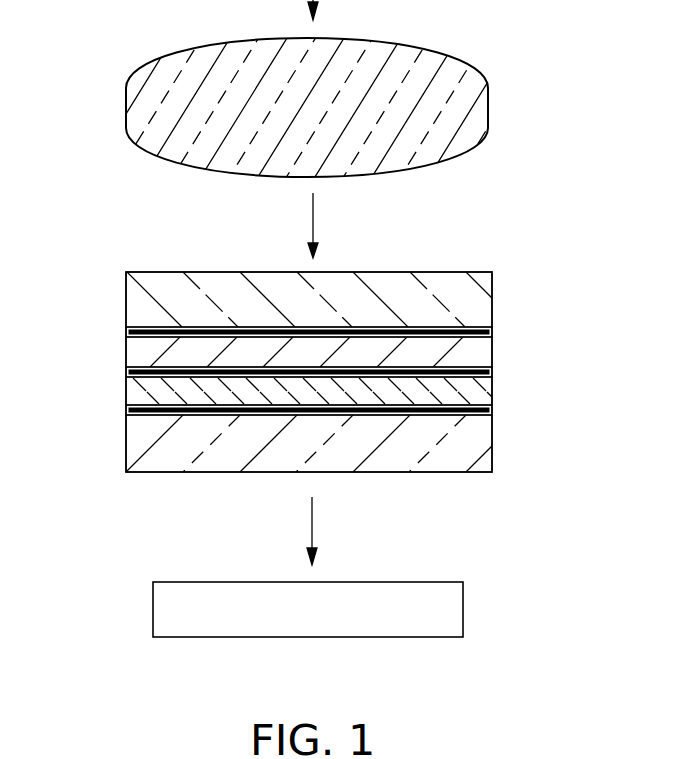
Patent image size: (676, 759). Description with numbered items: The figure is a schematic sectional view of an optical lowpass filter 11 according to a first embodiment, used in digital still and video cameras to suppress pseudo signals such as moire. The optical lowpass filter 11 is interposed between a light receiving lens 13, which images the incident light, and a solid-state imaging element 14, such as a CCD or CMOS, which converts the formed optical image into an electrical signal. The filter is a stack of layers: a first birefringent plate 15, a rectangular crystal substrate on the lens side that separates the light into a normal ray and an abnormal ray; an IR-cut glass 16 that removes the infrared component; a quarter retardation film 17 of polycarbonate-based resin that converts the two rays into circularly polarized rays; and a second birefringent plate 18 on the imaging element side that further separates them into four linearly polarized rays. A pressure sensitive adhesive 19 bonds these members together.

The optical lowpass filter 11 is at (486, 250).
The light receiving lens 13 is at (481, 105).
The solid-state imaging element 14 is at (455, 612).
The first birefringent plate 15 is at (482, 307).
The IR-cut glass 16 is at (482, 353).
The ¼ retardation film 17 is at (482, 393).
The second birefringent plate 18 is at (482, 438).
The pressure sensitive adhesive 19 is at (127, 409).